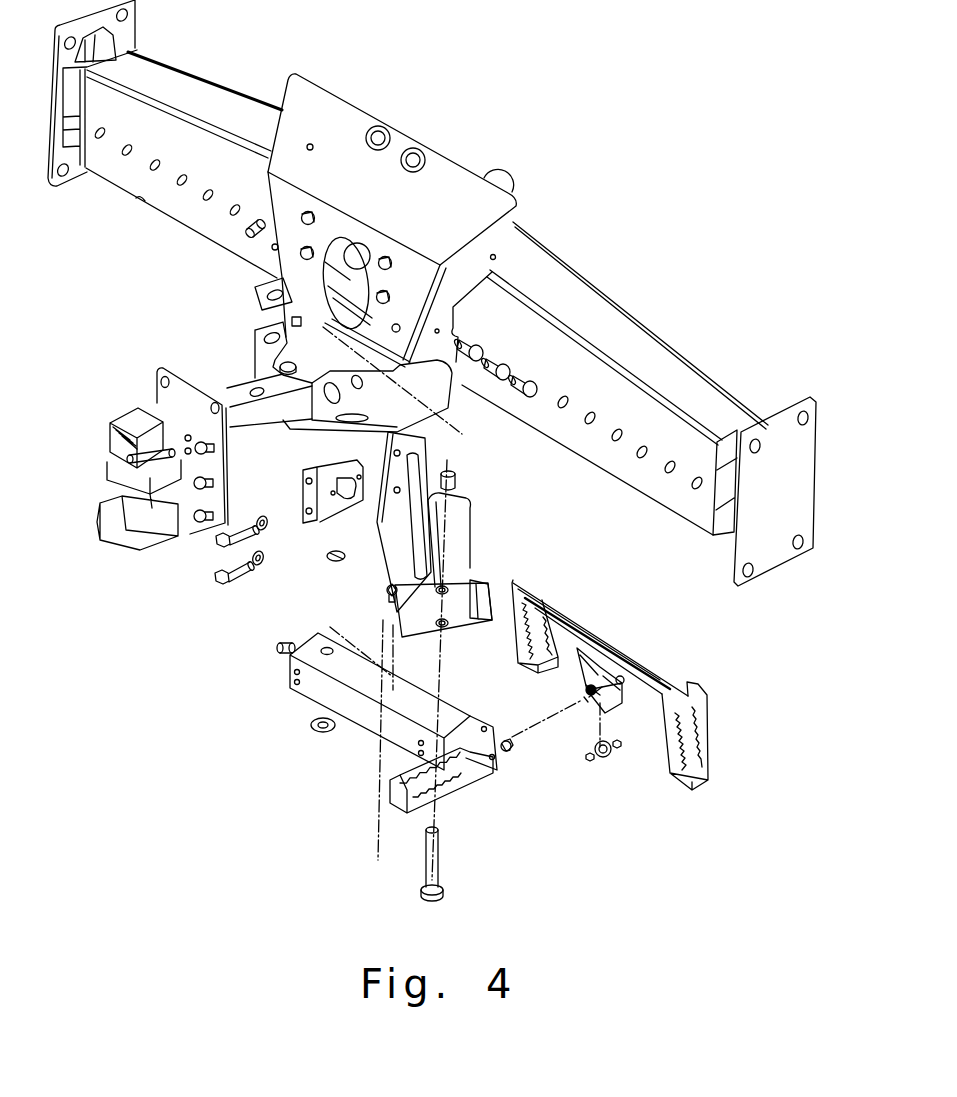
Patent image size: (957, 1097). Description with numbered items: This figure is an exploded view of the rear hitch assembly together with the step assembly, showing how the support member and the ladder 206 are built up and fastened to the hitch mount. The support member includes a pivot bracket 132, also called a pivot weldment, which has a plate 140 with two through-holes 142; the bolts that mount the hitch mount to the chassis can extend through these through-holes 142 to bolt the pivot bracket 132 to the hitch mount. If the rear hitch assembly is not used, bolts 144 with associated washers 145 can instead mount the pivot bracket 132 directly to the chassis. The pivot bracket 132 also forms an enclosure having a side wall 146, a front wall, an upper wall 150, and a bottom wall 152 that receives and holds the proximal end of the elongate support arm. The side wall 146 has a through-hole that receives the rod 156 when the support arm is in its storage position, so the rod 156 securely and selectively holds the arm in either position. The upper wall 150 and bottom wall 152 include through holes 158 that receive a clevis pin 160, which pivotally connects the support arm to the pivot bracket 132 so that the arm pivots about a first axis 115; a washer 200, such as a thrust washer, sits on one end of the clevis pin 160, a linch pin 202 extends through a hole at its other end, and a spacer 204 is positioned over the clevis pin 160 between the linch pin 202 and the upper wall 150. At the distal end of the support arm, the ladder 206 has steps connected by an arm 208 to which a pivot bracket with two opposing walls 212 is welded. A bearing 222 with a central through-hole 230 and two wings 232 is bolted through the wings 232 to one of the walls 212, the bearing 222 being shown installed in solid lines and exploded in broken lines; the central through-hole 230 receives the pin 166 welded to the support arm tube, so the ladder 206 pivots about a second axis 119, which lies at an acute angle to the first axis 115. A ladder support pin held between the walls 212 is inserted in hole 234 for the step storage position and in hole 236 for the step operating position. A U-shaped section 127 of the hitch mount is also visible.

The first axis 115 is at (452, 545).
The second axis 119 is at (512, 742).
The U-shaped section 127 is at (458, 387).
The pivot bracket 132 is at (472, 523).
The plate 140 is at (380, 478).
The through-holes 142 is at (398, 468).
The bolts 144 is at (223, 548).
The washers 145 is at (256, 567).
The side wall 146 is at (384, 596).
The upper wall 150 is at (474, 581).
The bottom wall 152 is at (473, 620).
The rod 156 is at (280, 651).
The through holes 158 is at (433, 625).
The clevis pin 160 is at (438, 864).
The pin 166 is at (493, 759).
The washer 200 is at (318, 731).
The linch pin 202 is at (335, 562).
The spacer 204 is at (456, 482).
The ladder 206 is at (616, 672).
The arm 208 is at (563, 597).
The opposing walls 212 is at (600, 712).
The bearing 222 is at (604, 770).
The central through-hole 230 is at (613, 753).
The wings 232 is at (617, 740).
The hole 234 is at (482, 773).
The hole 236 is at (482, 724).